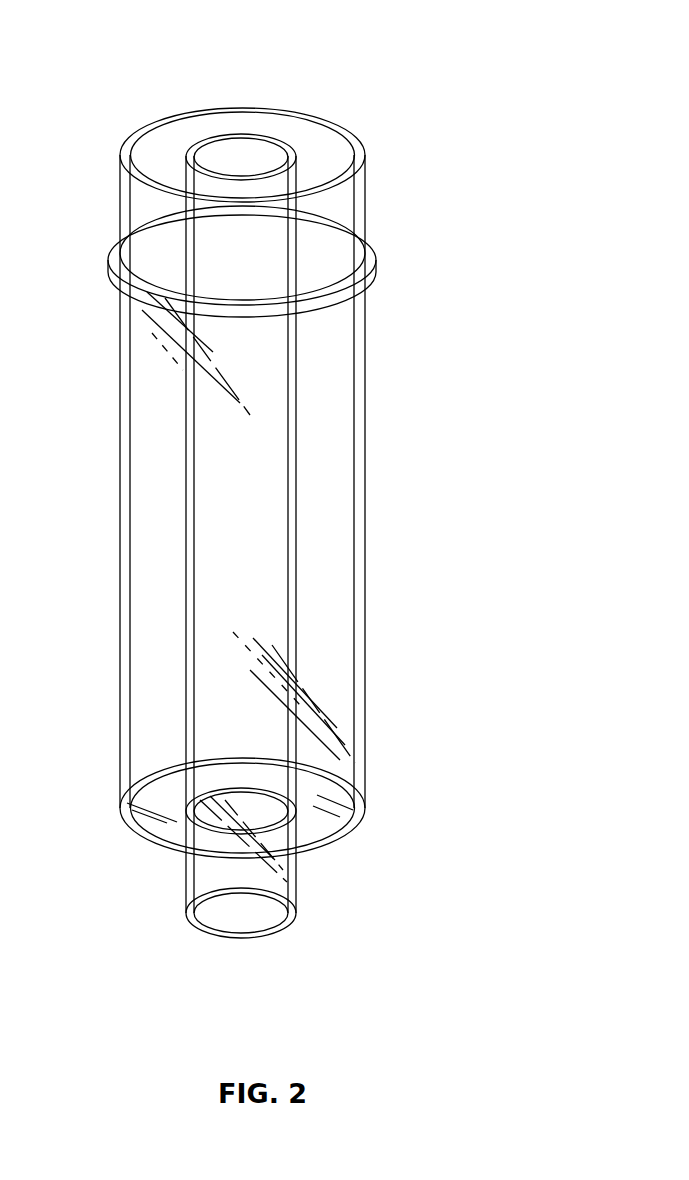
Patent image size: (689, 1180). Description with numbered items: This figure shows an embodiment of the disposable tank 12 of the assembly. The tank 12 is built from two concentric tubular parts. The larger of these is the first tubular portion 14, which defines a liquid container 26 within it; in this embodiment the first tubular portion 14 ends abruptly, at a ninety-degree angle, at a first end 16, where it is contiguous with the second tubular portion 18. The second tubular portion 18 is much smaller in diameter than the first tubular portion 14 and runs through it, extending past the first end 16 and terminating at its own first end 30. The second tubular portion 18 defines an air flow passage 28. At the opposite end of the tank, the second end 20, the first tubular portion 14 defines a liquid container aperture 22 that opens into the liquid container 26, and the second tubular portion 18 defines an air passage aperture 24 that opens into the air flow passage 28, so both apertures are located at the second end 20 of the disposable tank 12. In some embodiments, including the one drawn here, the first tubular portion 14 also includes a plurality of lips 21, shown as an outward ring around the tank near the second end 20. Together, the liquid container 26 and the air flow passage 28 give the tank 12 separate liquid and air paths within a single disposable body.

The disposable tank 12 is at (382, 72).
The first tubular portion 14 is at (365, 343).
The first end 16 is at (340, 843).
The second tubular portion 18 is at (190, 880).
The second end 20 is at (147, 127).
The lips 21 is at (147, 290).
The liquid container aperture 22 is at (333, 153).
The air passage aperture 24 is at (239, 153).
The liquid container 26 is at (147, 652).
The air flow passage 28 is at (270, 597).
The first end 30 is at (273, 928).